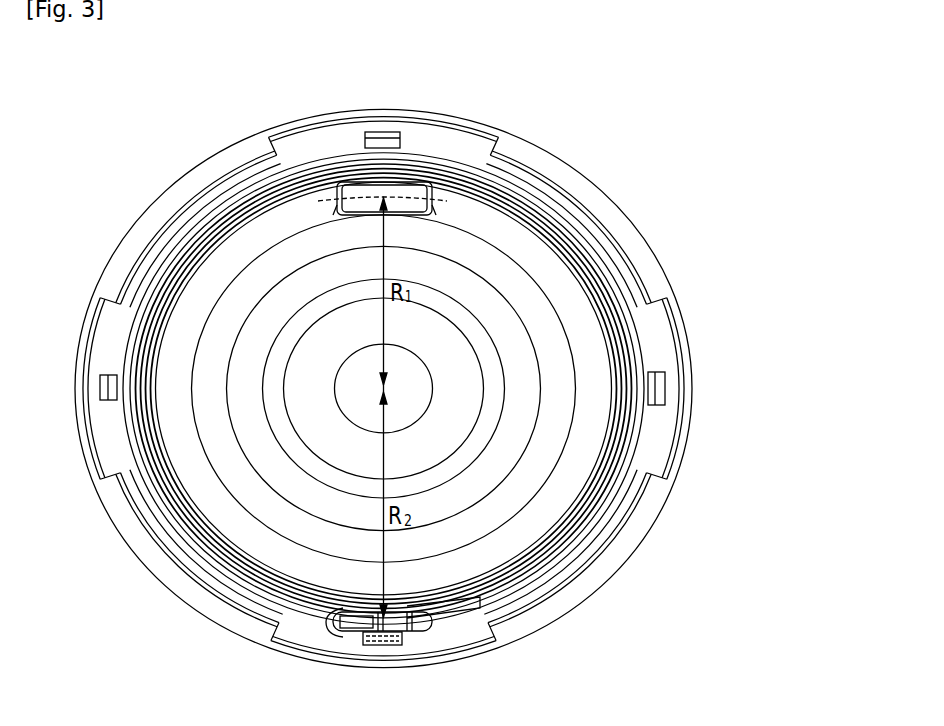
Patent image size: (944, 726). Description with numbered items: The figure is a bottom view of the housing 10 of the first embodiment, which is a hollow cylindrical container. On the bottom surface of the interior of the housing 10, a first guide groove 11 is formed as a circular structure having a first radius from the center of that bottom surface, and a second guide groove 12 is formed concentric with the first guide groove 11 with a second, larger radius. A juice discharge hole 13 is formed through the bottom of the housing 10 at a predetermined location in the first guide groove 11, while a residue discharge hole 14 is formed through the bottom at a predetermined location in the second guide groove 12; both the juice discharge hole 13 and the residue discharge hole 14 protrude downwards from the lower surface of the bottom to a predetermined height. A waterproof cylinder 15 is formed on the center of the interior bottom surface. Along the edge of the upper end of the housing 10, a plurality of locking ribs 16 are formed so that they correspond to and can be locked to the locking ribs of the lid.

The housing 10 is at (76, 159).
The first guide groove 11 is at (595, 357).
The second guide groove 12 is at (657, 435).
The juice discharge hole 13 is at (412, 192).
The residue discharge hole 14 is at (334, 633).
The waterproof cylinder 15 is at (305, 400).
The locking ribs 16 is at (583, 190).